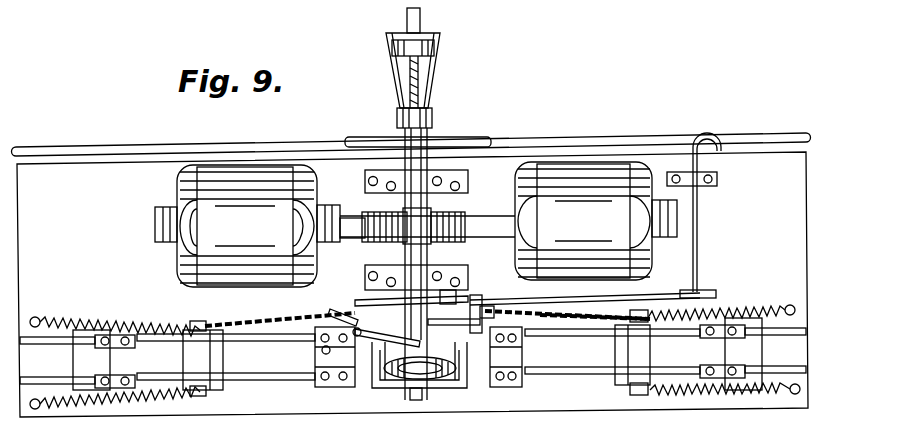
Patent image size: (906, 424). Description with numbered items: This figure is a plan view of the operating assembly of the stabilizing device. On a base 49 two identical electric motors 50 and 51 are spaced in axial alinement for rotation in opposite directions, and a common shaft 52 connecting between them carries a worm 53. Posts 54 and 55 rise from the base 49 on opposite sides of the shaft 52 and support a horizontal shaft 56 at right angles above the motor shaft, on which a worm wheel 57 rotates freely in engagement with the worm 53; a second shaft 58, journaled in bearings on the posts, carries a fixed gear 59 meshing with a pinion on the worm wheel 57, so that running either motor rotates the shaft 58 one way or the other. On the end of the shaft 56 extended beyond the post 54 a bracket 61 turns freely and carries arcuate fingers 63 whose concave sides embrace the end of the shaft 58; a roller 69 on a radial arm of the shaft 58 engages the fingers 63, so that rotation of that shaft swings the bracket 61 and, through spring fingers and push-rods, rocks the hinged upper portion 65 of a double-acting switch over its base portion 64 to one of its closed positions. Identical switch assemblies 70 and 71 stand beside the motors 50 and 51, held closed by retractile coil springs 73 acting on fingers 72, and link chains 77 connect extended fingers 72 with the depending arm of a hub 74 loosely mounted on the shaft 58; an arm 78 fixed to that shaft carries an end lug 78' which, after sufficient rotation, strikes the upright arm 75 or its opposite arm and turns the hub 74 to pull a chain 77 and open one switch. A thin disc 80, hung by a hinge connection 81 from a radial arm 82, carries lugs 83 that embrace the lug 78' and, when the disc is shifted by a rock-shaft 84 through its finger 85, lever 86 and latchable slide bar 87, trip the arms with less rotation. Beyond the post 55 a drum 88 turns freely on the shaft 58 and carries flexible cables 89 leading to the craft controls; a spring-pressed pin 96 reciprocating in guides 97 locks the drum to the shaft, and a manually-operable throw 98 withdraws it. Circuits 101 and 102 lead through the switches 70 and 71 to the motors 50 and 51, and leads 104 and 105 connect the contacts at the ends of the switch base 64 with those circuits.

The base 49 is at (412, 284).
The electric motor 50 is at (247, 226).
The electric motor 51 is at (596, 221).
The common shaft 52 is at (470, 214).
The worm 53 is at (352, 218).
The post 54 is at (365, 281).
The post 55 is at (365, 177).
The shaft 56 is at (440, 386).
The worm wheel 57 is at (375, 243).
The second shaft 58 is at (429, 248).
The gear 59 is at (462, 243).
The bracket 61 is at (392, 388).
The arcuate fingers 63 is at (418, 350).
The switch base portion 64 is at (315, 357).
The movable upper switch portion 65 is at (343, 388).
The roller 69 is at (414, 400).
The switch assembly 70 is at (114, 360).
The switch assembly 71 is at (721, 354).
The fingers 72 is at (206, 325).
The retractile coil springs 73 is at (70, 322).
The hub 74 is at (449, 290).
The radial arm 75 is at (408, 298).
The link chains 77 is at (270, 322).
The arm 78 is at (454, 330).
The end lug 78' is at (481, 305).
The disc 80 is at (380, 329).
The hinge connection 81 is at (340, 318).
The radial arm 82 is at (331, 350).
The lugs 83 is at (488, 306).
The rock-shaft 84 is at (575, 306).
The finger 85 is at (512, 310).
The lever 86 is at (700, 290).
The latchable slide bar 87 is at (697, 250).
The drum 88 is at (450, 138).
The flexible cables 89 is at (228, 150).
The spring-pressed pin 96 is at (426, 90).
The guides 97 is at (434, 48).
The manually-operable throw 98 is at (407, 30).
The circuit 101 is at (44, 345).
The circuit 102 is at (762, 336).
The leads 104 is at (248, 341).
The leads 105 is at (580, 337).